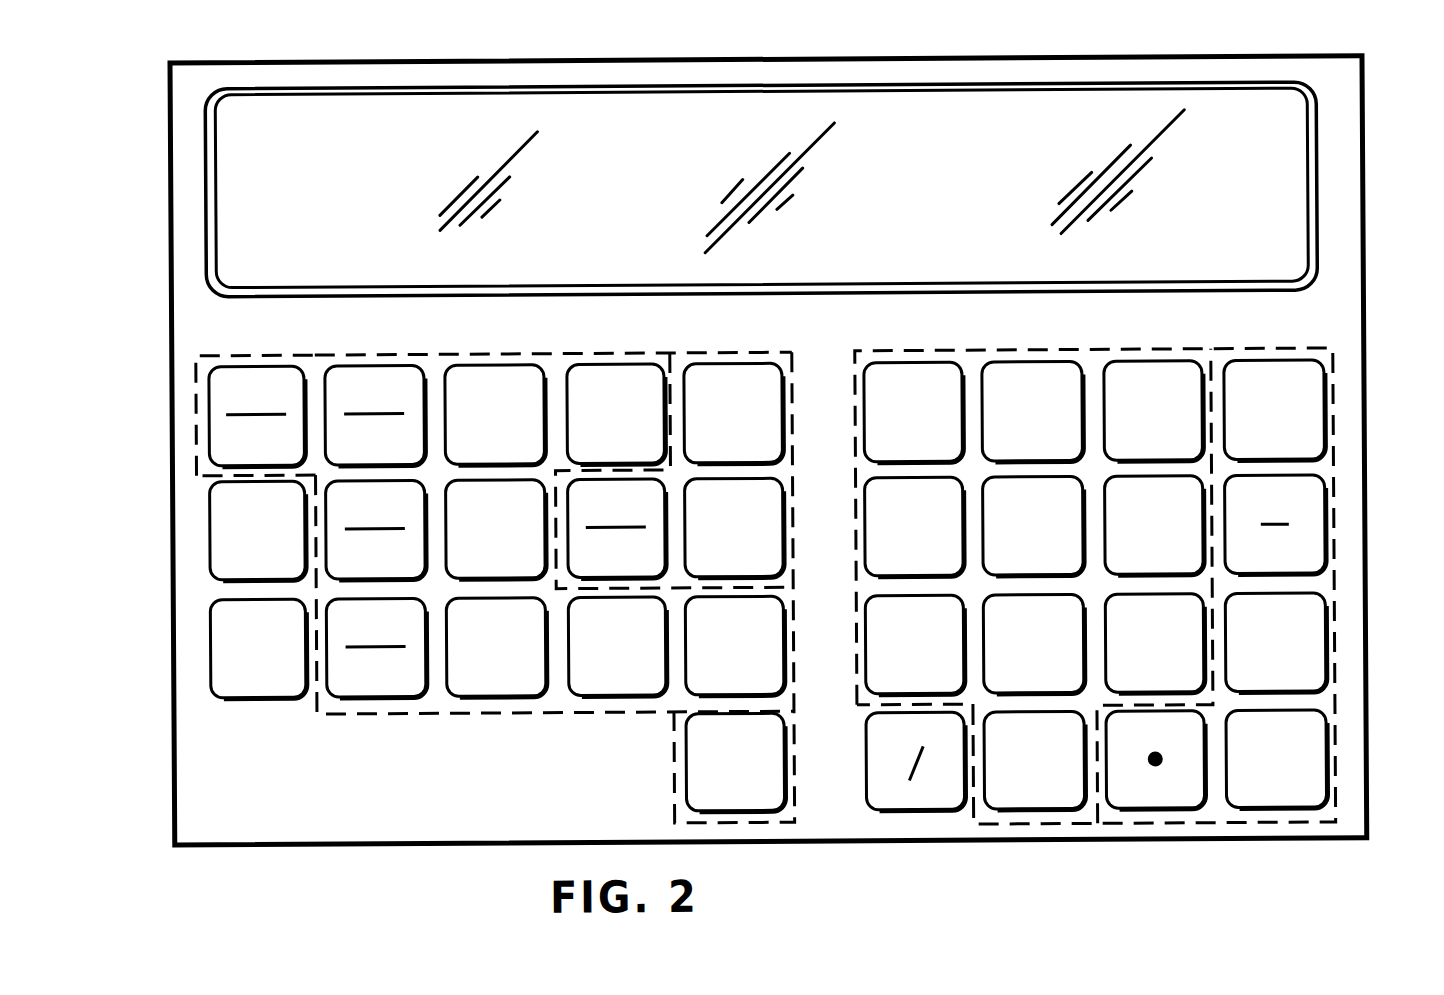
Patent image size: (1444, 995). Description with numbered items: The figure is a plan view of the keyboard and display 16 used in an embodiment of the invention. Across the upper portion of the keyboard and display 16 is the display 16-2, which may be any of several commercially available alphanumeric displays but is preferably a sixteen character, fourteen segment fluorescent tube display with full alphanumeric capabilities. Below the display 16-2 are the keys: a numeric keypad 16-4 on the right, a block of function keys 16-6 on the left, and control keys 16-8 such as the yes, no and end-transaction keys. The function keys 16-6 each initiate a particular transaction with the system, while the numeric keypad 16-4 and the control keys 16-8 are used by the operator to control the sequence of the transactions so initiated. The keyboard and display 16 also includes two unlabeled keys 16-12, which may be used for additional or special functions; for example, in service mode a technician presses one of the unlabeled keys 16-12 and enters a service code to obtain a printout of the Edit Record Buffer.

The keyboard and display 16 is at (723, 451).
The display 16-2 is at (761, 156).
The numeric keypad 16-4 is at (1141, 541).
The function keys 16-6 is at (555, 620).
The control keys 16-8 is at (945, 620).
The unlabeled keys 16-12 is at (200, 595).